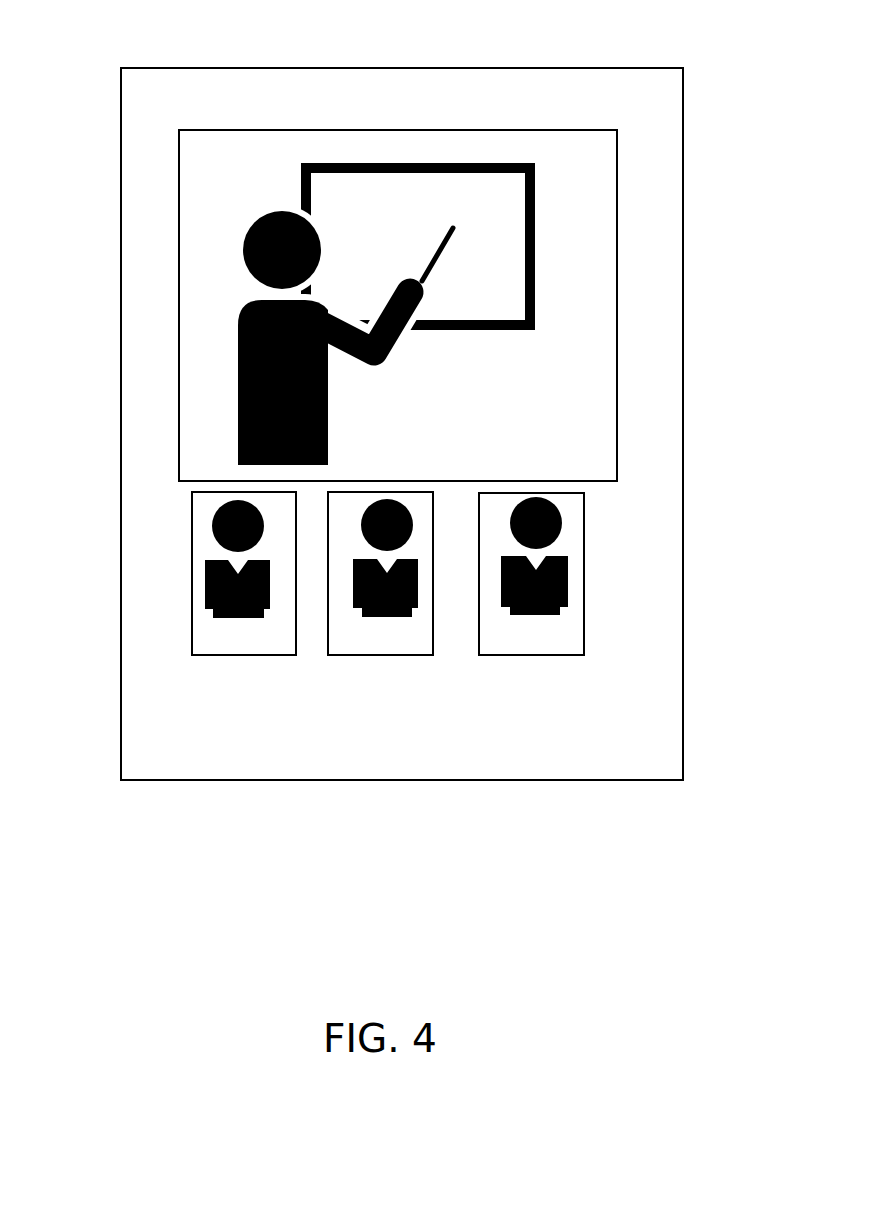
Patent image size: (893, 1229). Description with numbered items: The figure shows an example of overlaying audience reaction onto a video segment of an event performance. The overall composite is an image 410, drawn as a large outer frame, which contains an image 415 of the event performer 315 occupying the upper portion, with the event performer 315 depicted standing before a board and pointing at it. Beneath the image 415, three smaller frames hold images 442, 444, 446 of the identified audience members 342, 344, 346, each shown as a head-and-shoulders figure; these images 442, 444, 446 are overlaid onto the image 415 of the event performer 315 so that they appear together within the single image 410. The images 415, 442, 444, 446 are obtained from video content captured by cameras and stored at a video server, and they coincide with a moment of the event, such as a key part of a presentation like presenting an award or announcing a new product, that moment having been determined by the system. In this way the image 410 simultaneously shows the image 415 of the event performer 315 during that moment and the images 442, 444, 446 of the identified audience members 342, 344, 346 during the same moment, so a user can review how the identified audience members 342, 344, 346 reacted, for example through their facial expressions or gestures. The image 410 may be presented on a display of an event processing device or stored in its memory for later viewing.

The image 410 is at (252, 781).
The image of the event performer 415 is at (244, 129).
The event performer 315 is at (200, 282).
The identified audience member 342 is at (200, 547).
The identified audience member 344 is at (411, 492).
The identified audience member 346 is at (578, 515).
The image of identified audience member 442 is at (219, 657).
The image of identified audience member 444 is at (357, 657).
The image of identified audience member 446 is at (507, 657).